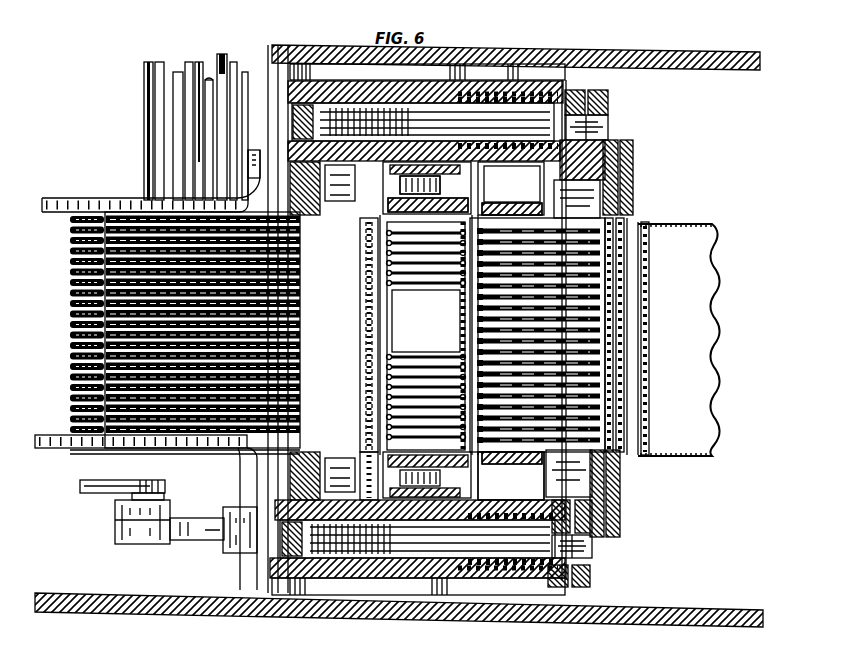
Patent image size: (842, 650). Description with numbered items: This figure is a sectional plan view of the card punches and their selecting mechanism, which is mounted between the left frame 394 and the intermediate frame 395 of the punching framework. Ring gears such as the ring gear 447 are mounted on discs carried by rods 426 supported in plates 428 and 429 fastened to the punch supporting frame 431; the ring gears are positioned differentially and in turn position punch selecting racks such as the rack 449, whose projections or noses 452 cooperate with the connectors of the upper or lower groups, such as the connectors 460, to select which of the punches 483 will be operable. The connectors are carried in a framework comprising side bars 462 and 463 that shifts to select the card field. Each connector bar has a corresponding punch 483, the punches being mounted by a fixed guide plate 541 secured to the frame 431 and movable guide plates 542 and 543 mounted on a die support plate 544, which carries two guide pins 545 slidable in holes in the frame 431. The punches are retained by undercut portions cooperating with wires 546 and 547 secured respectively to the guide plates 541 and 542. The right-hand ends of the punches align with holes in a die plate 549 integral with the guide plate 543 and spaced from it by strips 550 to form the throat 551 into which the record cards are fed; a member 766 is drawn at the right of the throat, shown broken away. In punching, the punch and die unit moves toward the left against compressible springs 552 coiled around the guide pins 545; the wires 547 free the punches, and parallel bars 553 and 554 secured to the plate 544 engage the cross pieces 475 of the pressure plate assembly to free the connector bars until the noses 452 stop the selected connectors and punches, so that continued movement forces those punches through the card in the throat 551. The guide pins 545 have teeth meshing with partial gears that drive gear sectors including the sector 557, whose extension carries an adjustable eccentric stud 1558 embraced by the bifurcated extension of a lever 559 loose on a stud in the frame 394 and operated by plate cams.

The intermediate frame 395 is at (667, 70).
The left frame 394 is at (684, 610).
The punch supporting frame 431 is at (385, 80).
The guide pins 545 is at (540, 98).
The compressible springs 552 is at (560, 98).
The strips 550 is at (615, 145).
The throat 551 is at (604, 470).
The movable guide plate 543 is at (598, 485).
The die support plate 544 is at (585, 505).
The die plate 549 is at (612, 530).
The movable guide plate 542 is at (548, 462).
The wires 547 is at (566, 215).
The wires 546 is at (513, 186).
The parallel bar 553 is at (513, 202).
The side bar 462 is at (432, 196).
The cross pieces 475 is at (446, 196).
The parallel bar 554 is at (512, 486).
The fixed guide plate 541 is at (508, 468).
The rods 426 is at (217, 54).
The plate 429 is at (102, 200).
The ring gear 447 is at (72, 230).
The plate 428 is at (77, 450).
The lever 559 is at (105, 487).
The adjustable eccentric stud 1558 is at (150, 482).
The gear sector 557 is at (116, 528).
The projections 452 is at (373, 326).
The connectors 460 is at (432, 288).
The punch selecting rack 449 is at (426, 320).
The side bar 463 is at (385, 452).
The punches 483 is at (628, 222).
The member 766 is at (718, 282).